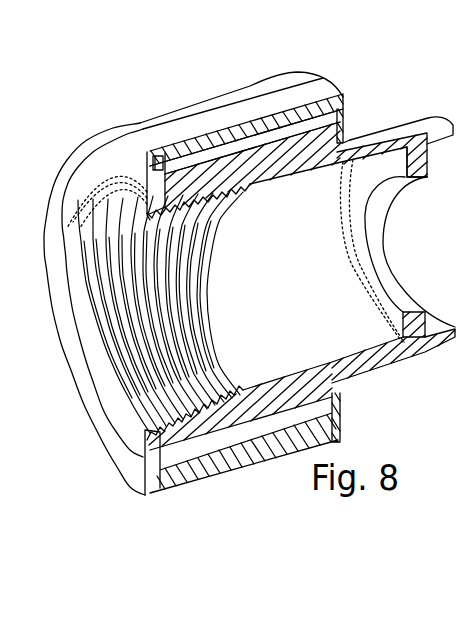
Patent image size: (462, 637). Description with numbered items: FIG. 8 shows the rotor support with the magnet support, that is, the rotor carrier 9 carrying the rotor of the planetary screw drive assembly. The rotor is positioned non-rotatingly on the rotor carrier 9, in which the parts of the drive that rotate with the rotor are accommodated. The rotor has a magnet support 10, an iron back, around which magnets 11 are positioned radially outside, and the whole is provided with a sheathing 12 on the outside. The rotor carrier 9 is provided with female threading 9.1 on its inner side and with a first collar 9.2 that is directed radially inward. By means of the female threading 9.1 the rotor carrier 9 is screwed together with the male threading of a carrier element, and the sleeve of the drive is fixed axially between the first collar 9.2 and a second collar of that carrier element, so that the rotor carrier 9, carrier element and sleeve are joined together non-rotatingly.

The rotor carrier 9 is at (306, 163).
The female threading 9.1 is at (211, 197).
The first collar 9.2 is at (418, 165).
The magnet support 10 is at (197, 173).
The magnets 11 is at (212, 148).
The sheathing 12 is at (237, 108).